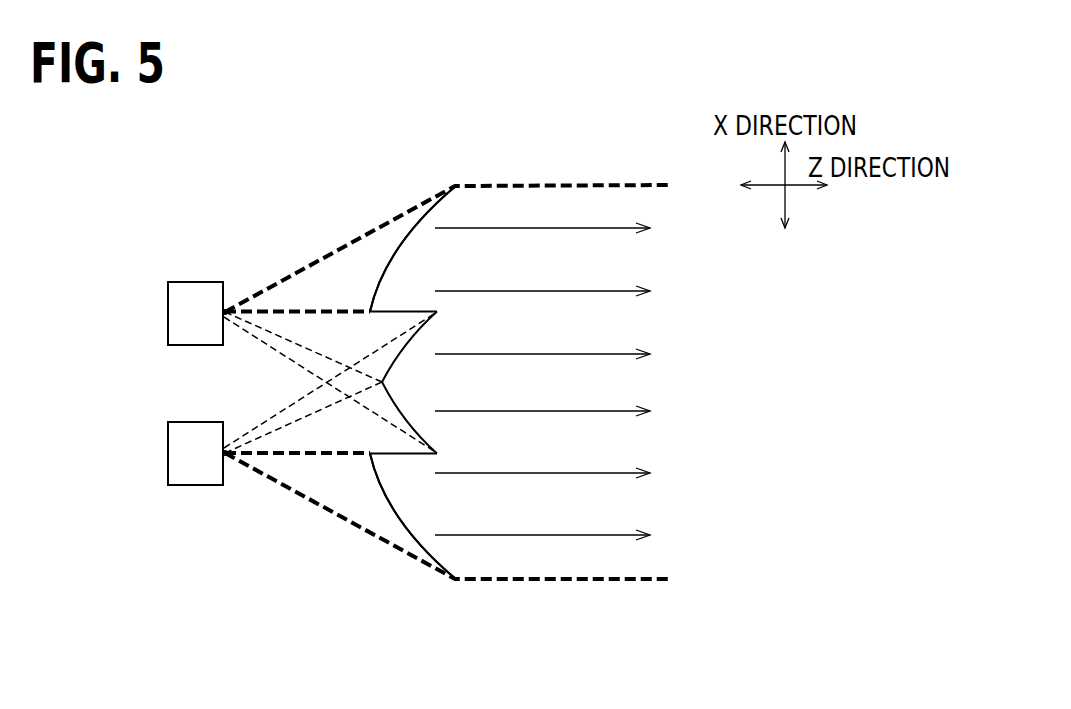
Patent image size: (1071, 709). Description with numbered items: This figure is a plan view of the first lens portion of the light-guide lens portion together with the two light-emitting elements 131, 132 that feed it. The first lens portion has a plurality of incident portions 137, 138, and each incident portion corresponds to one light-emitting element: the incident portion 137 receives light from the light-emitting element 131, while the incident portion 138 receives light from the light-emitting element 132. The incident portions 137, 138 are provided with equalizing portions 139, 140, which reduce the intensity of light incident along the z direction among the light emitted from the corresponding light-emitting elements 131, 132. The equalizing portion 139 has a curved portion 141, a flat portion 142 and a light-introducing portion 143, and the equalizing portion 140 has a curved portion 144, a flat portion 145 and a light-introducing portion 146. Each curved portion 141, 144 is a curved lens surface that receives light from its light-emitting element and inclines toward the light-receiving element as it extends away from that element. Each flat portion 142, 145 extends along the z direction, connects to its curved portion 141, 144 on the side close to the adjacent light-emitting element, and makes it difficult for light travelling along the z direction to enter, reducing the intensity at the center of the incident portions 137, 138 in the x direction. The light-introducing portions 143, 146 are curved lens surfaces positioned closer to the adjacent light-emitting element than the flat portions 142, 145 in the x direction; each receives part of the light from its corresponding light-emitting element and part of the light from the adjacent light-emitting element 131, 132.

The light-emitting element 131 is at (168, 452).
The light-emitting element 132 is at (168, 312).
The incident portion 137 is at (432, 567).
The incident portion 138 is at (436, 193).
The equalizing portion 139 is at (380, 485).
The equalizing portion 140 is at (378, 280).
The curved portion 141 is at (411, 536).
The flat portion 142 is at (387, 453).
The light-introducing portion 143 is at (390, 398).
The curved portion 144 is at (394, 259).
The flat portion 145 is at (385, 312).
The light-introducing portion 146 is at (390, 366).